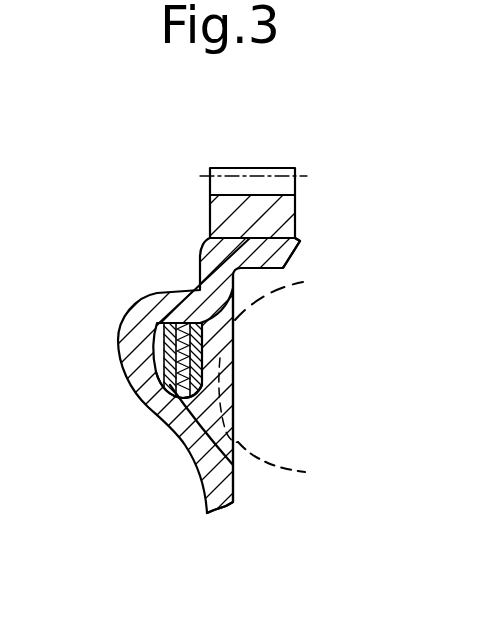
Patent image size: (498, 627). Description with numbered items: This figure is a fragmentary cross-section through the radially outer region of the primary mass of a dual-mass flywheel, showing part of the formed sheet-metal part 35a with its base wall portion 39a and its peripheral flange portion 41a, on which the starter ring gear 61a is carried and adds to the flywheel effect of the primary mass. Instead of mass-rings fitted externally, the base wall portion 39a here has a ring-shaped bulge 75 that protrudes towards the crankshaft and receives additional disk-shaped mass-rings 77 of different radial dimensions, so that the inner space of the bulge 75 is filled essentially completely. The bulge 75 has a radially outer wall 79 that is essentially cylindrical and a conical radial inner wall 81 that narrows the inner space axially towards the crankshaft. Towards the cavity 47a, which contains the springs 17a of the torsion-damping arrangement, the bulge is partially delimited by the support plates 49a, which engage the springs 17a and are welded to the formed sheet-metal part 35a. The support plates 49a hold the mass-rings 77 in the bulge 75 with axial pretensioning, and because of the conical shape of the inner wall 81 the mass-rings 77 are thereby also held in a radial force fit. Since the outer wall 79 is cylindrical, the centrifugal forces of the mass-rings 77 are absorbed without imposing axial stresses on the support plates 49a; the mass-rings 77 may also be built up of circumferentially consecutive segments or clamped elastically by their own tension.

The starter ring gear 61a is at (218, 186).
The radially outer wall 79 is at (173, 305).
The formed sheet-metal part 35a is at (133, 294).
The peripheral flange portion 41a is at (270, 253).
The ring-shaped bulge 75 is at (145, 340).
The mass-rings 77 is at (178, 400).
The radial inner wall 81 is at (167, 427).
The base wall portion 39a is at (210, 503).
The support plates 49a is at (233, 347).
The cavity 47a is at (270, 392).
The springs 17a is at (277, 467).